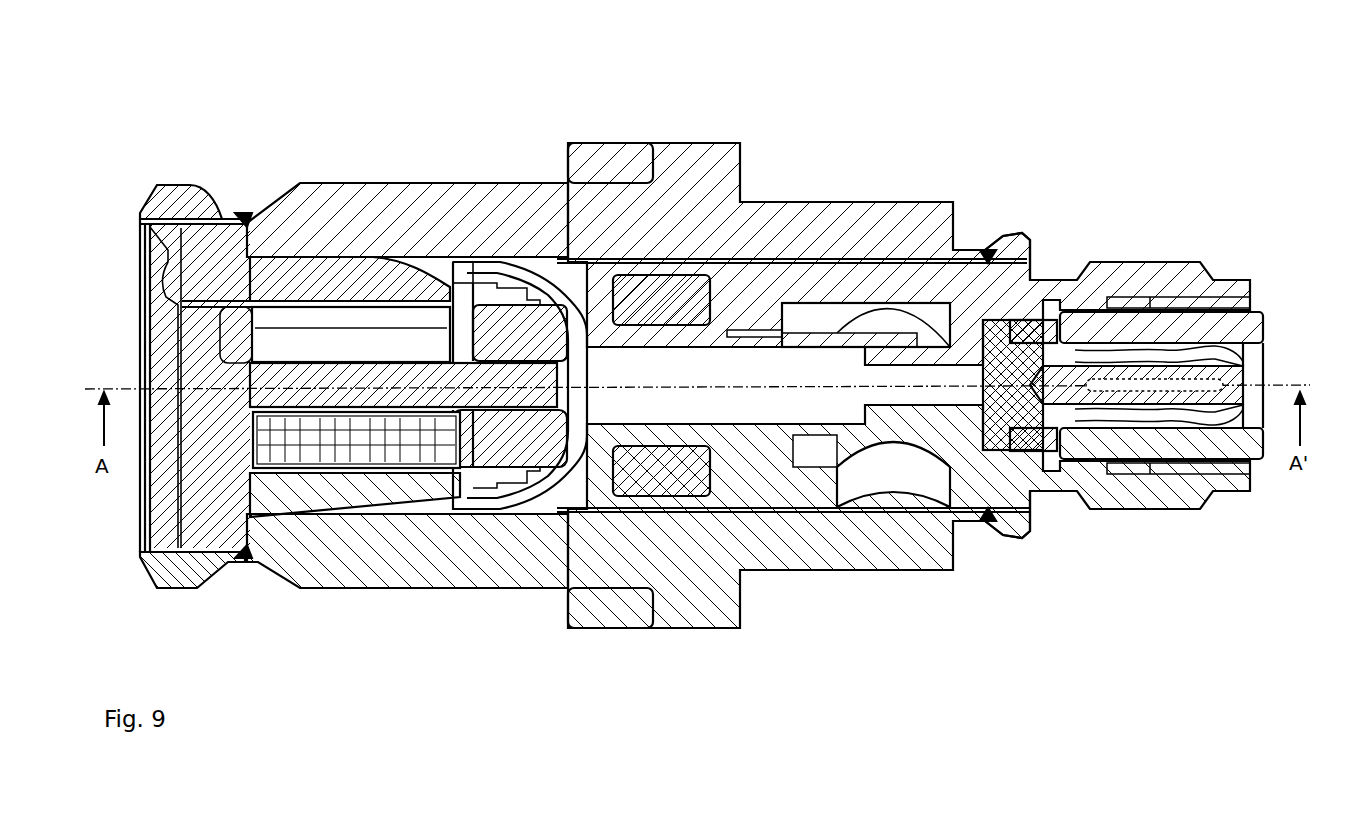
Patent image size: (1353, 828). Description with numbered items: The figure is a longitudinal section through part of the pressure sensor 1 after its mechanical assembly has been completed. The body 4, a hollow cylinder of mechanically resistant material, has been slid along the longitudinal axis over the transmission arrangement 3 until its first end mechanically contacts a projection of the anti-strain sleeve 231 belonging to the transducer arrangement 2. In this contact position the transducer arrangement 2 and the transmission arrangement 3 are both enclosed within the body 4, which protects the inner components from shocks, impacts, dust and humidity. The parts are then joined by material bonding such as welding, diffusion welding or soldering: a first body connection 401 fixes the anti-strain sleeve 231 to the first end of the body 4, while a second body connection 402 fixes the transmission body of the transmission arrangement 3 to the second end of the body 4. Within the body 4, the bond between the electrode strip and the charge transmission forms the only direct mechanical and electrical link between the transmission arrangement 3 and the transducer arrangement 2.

The pressure sensor 1 is at (662, 99).
The transducer arrangement 2 is at (398, 166).
The transmission arrangement 3 is at (1078, 209).
The body 4 is at (920, 212).
The anti-strain sleeve 231 is at (240, 216).
The first body connection 401 is at (243, 216).
The second body connection 402 is at (988, 256).